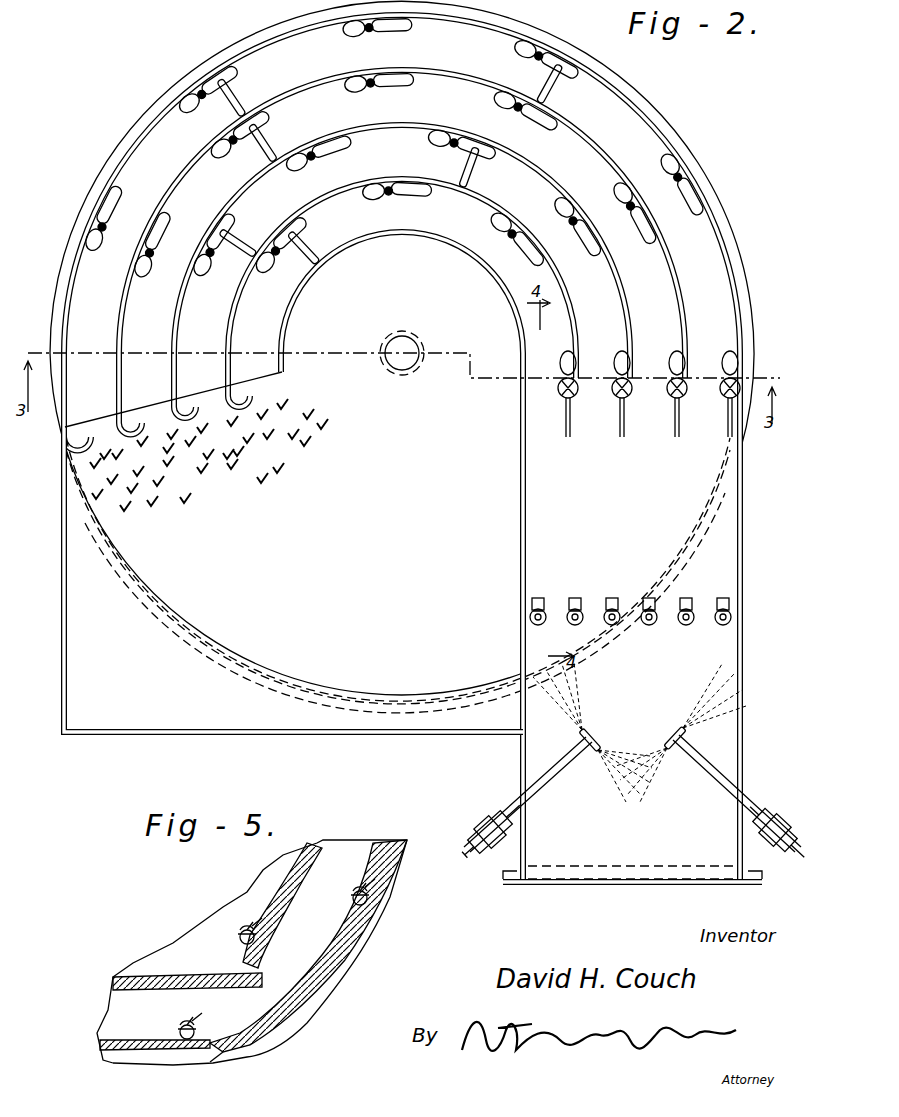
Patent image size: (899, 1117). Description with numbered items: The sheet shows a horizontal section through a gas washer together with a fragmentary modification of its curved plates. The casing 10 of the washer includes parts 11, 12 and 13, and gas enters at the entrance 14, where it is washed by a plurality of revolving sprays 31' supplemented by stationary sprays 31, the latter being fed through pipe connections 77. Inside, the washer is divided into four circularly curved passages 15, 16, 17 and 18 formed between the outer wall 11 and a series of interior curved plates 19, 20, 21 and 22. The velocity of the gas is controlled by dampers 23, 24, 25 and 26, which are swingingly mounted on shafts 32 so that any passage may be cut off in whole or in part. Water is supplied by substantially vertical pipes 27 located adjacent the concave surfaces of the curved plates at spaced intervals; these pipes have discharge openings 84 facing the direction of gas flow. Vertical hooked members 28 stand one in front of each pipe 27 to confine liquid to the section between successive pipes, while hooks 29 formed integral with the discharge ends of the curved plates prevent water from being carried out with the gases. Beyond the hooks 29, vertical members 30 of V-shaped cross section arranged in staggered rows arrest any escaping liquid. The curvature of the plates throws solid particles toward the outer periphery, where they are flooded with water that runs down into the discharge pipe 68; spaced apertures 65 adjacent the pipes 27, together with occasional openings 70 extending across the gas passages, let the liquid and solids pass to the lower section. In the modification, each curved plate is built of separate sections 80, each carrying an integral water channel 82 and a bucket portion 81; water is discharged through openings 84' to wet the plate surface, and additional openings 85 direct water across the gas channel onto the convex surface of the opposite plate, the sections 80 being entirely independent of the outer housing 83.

In FIG. 2, the casing 10 is at (136, 145).
In FIG. 2, the outer wall 11 is at (725, 254).
In FIG. 2, the casing part 12 is at (215, 735).
In FIG. 2, the casing part 13 is at (520, 773).
In FIG. 2, the entrance 14 is at (556, 885).
In FIG. 2, the passage 15 is at (708, 318).
In FIG. 2, the passage 16 is at (652, 322).
In FIG. 2, the passage 17 is at (604, 337).
In FIG. 2, the passage 18 is at (548, 347).
In FIG. 2, the interior curved plate 19 is at (699, 257).
In FIG. 2, the interior curved plate 20 is at (650, 286).
In FIG. 2, the interior curved plate 21 is at (597, 297).
In FIG. 2, the interior curved plate 22 is at (541, 302).
In FIG. 2, the damper 23 is at (728, 420).
In FIG. 2, the damper 24 is at (675, 436).
In FIG. 2, the damper 25 is at (620, 436).
In FIG. 2, the damper 26 is at (566, 436).
In FIG. 2, the vertical pipe 27 is at (350, 36).
In FIG. 2, the vertical hooked member 28 is at (515, 52).
In FIG. 2, the hook 29 is at (84, 438).
In FIG. 2, the V-shaped vertical member 30 is at (172, 440).
In FIG. 2, the stationary spray 31 is at (630, 578).
In FIG. 2, the revolving spray 31' is at (632, 757).
In FIG. 2, the shaft 32 is at (724, 394).
In FIG. 2, the aperture 65 is at (404, 32).
In FIG. 2, the discharge pipe 68 is at (400, 370).
In FIG. 2, the opening 70 is at (556, 86).
In FIG. 2, the pipe connection 77 is at (538, 626).
In FIG. 5, the plate section 80 is at (308, 865).
In FIG. 5, the bucket portion 81 is at (240, 940).
In FIG. 5, the water channel 82 is at (356, 888).
In FIG. 5, the outer housing 83 is at (347, 963).
In FIG. 2, the discharge opening 84 is at (413, 188).
In FIG. 5, the opening 84' is at (283, 952).
In FIG. 5, the opening 85 is at (352, 894).